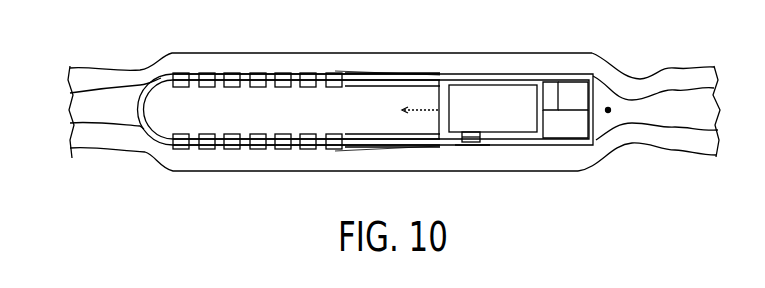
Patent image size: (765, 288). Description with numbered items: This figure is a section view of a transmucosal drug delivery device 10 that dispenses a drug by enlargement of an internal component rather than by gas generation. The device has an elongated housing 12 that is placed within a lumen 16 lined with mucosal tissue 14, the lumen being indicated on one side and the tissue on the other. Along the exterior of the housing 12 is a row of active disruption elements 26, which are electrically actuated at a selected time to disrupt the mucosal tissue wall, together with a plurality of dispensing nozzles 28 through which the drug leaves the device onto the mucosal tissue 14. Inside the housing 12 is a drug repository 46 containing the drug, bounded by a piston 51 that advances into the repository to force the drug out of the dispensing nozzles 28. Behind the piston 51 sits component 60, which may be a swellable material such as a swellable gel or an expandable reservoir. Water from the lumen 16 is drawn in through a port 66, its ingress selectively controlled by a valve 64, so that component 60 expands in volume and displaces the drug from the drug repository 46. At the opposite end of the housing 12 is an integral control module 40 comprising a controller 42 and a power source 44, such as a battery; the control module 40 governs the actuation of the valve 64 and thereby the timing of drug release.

The transmucosal drug delivery device 10 is at (492, 75).
The housing 12 is at (157, 140).
The mucosal tissue 14 is at (127, 85).
The lumen 16 is at (608, 108).
The active disruption elements 26 is at (235, 72).
The dispensing nozzles 28 is at (270, 72).
The integral control module 40 is at (552, 88).
The controller 42 is at (573, 88).
The power source 44 is at (567, 132).
The drug repository 46 is at (350, 98).
The piston 51 is at (440, 85).
The component 60 is at (480, 92).
The valve 64 is at (465, 142).
The port 66 is at (471, 140).